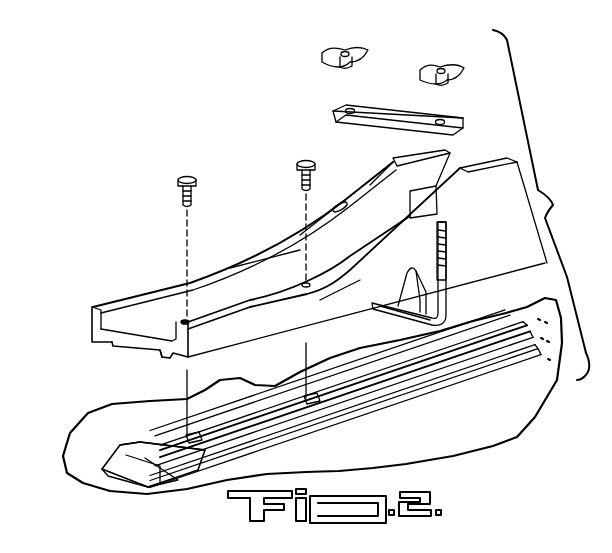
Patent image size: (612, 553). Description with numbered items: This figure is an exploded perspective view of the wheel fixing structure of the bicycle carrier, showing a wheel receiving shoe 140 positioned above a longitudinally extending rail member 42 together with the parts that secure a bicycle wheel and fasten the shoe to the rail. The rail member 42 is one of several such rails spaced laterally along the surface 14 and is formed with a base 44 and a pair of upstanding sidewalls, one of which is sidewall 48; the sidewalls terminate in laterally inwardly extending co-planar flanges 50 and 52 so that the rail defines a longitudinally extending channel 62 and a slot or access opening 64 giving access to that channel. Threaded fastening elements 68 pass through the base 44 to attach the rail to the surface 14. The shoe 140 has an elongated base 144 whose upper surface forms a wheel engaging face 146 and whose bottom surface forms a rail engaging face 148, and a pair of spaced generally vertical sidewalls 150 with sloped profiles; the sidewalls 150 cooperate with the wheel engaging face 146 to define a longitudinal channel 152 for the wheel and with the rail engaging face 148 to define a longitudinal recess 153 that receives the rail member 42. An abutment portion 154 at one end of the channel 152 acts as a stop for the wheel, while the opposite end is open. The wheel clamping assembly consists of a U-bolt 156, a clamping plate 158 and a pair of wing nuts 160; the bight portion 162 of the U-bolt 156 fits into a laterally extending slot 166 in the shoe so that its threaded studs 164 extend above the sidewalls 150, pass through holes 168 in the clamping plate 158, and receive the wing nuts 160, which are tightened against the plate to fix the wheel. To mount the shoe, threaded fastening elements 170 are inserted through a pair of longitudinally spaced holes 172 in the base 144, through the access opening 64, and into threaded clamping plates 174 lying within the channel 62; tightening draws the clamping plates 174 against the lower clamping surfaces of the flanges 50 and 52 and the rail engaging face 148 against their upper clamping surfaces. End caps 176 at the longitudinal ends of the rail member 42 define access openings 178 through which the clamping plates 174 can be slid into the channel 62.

The surface 14 is at (502, 434).
The rail member 42 is at (299, 441).
The base 44 is at (235, 427).
The sidewall 48 is at (376, 404).
The flange 50 is at (328, 388).
The flange 52 is at (404, 381).
The channel 62 is at (112, 457).
The slot or access opening 64 is at (470, 356).
The threaded fastening elements 68 is at (160, 448).
The wheel receiving shoe 140 is at (494, 261).
The elongated base 144 is at (97, 308).
The wheel engaging face 146 is at (145, 326).
The rail engaging face 148 is at (150, 351).
The sidewalls 150 is at (268, 256).
The longitudinal channel 152 is at (284, 279).
The longitudinal recess 153 is at (127, 351).
The abutment portion 154 is at (432, 186).
The U-bolt 156 is at (446, 305).
The clamping plate 158 is at (333, 111).
The wing nuts 160 is at (425, 66).
The bight portion 162 is at (441, 331).
The threaded studs 164 is at (338, 204).
The slot 166 is at (407, 281).
The holes 168 is at (440, 119).
The threaded fastening elements 170 is at (178, 178).
The holes 172 is at (184, 318).
The threaded clamping plates 174 is at (193, 437).
The end caps 176 is at (120, 478).
The access openings 178 is at (146, 462).